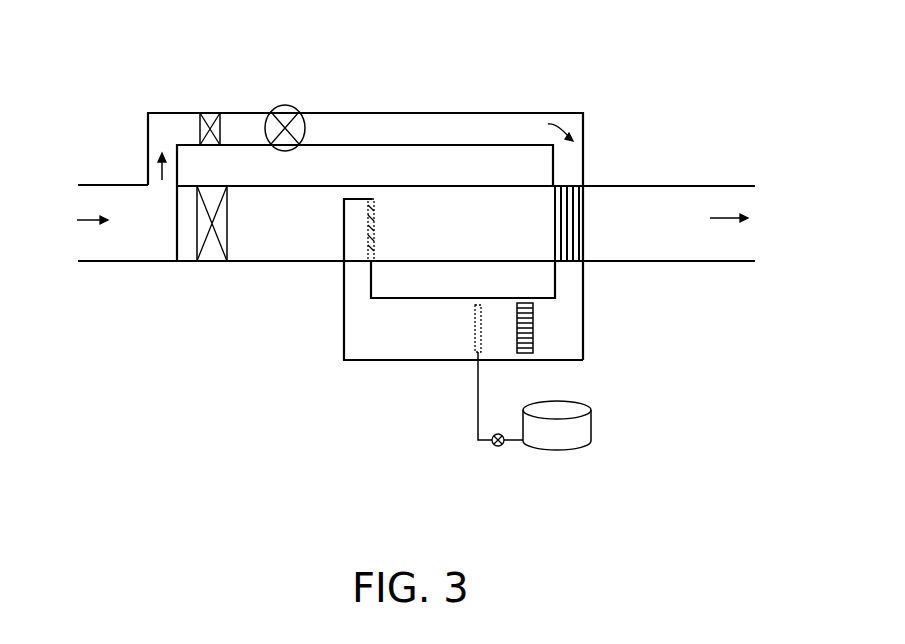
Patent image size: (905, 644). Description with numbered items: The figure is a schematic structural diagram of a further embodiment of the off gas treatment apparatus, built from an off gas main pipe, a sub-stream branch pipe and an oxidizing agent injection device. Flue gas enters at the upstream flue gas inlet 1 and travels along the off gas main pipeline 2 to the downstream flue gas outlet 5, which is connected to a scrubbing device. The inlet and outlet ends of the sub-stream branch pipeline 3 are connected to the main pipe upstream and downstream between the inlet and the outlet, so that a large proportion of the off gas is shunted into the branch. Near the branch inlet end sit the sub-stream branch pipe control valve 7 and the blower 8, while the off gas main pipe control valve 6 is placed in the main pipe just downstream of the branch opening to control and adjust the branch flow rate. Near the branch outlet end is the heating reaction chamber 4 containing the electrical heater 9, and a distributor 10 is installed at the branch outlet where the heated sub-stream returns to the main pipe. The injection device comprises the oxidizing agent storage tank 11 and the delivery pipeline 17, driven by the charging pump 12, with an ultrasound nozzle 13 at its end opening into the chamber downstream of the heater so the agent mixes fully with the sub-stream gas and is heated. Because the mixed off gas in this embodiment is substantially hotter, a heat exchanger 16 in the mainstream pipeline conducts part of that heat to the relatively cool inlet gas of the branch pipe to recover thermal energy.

The upstream flue gas inlet 1 is at (93, 245).
The off gas main pipeline 2 is at (280, 238).
The sub-stream branch pipeline 3 is at (170, 132).
The heating reaction chamber 4 is at (393, 343).
The downstream flue gas outlet 5 is at (732, 205).
The off gas main pipe control valve 6 is at (198, 260).
The sub-stream branch pipe control valve 7 is at (212, 117).
The blower 8 is at (285, 107).
The heater 9 is at (533, 330).
The distributor 10 is at (370, 232).
The oxidizing agent storage tank 11 is at (580, 430).
The charging pump 12 is at (502, 445).
The nozzle 13 is at (480, 330).
The heat exchanger 16 is at (580, 218).
The delivery pipeline 17 is at (477, 413).